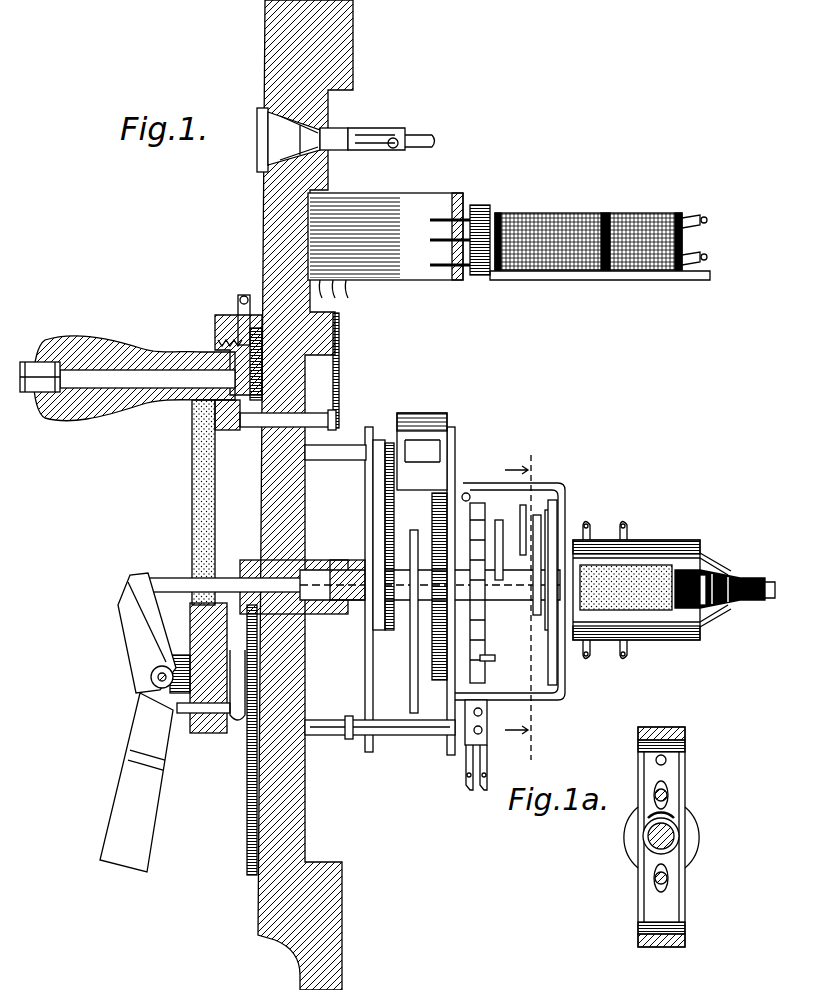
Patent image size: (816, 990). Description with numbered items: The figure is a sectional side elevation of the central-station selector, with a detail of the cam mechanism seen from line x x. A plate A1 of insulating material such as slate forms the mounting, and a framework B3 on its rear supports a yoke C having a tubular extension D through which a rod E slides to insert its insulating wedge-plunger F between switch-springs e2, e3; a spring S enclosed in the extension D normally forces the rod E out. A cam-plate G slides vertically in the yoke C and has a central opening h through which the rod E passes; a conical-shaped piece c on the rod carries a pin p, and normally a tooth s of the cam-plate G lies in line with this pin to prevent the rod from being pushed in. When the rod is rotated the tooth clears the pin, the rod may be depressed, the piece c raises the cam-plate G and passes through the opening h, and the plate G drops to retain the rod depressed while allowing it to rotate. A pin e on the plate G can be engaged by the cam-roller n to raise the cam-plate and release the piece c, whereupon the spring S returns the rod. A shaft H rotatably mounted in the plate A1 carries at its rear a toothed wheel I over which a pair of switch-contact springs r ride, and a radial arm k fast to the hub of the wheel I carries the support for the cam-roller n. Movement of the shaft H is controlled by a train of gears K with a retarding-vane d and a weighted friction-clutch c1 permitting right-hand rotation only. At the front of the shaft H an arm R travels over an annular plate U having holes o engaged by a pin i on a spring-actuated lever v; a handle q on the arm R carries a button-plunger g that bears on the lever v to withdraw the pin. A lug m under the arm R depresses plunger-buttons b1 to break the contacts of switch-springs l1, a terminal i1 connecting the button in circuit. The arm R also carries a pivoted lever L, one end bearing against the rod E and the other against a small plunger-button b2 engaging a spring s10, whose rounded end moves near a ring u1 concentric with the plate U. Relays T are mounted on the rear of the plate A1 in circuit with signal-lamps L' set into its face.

In FIG. 1, the mounting plate A1 is at (306, 812).
In FIG. 1, the signal-lamp L' is at (321, 145).
In FIG. 1, the terminal i1 is at (344, 292).
In FIG. 1, the relay T is at (556, 214).
In FIG. 1, the switch-springs l1 is at (340, 365).
In FIG. 1, the plunger-button b1 is at (333, 415).
In FIG. 1, the spring-actuated lever v is at (242, 294).
In FIG. 1, the holes o is at (250, 287).
In FIG. 1, the pin i is at (215, 335).
In FIG. 1, the lug m is at (215, 418).
In FIG. 1, the handle q is at (88, 348).
In FIG. 1, the button-plunger g is at (38, 360).
In FIG. 1, the arm R is at (192, 484).
In FIG. 1, the annular plate U is at (247, 850).
In FIG. 1, the ring u1 is at (290, 700).
In FIG. 1, the plunger-button b2 is at (182, 715).
In FIG. 1, the spring s10 is at (236, 722).
In FIG. 1, the rod E is at (158, 578).
In FIG. 1, the pivoted lever L is at (129, 722).
In FIG. 1, the framework B3 is at (447, 742).
In FIG. 1, the retarding-vane d is at (440, 415).
In FIG. 1, the weighted friction-clutch c1 is at (380, 440).
In FIG. 1, the train of gears K is at (422, 586).
In FIG. 1, the shaft H is at (325, 570).
In FIG. 1, the radial arm k is at (487, 593).
In FIG. 1, the cam-roller n is at (495, 541).
In FIG. 1, the pin e is at (520, 515).
In FIG. 1A, the pin e is at (667, 760).
In FIG. 1, the pin p is at (540, 545).
In FIG. 1A, the pin p is at (667, 812).
In FIG. 1, the toothed wheel I is at (485, 660).
In FIG. 1, the conical-shaped piece c is at (529, 589).
In FIG. 1A, the conical-shaped piece c is at (672, 844).
In FIG. 1, the yoke C is at (562, 483).
In FIG. 1A, the yoke C is at (665, 727).
In FIG. 1, the section line x is at (519, 595).
In FIG. 1, the switch-contact springs r is at (476, 755).
In FIG. 1, the tubular extension D is at (652, 566).
In FIG. 1, the wedge-plunger F is at (735, 608).
In FIG. 1, the switch-springs e2 is at (721, 544).
In FIG. 1, the switch-springs e3 is at (705, 628).
In FIG. 1, the spring S is at (650, 630).
In FIG. 1, the cam-plate G is at (560, 678).
In FIG. 1A, the cam-plate G is at (625, 855).
In FIG. 1A, the opening h is at (680, 836).
In FIG. 1A, the tooth s is at (645, 826).